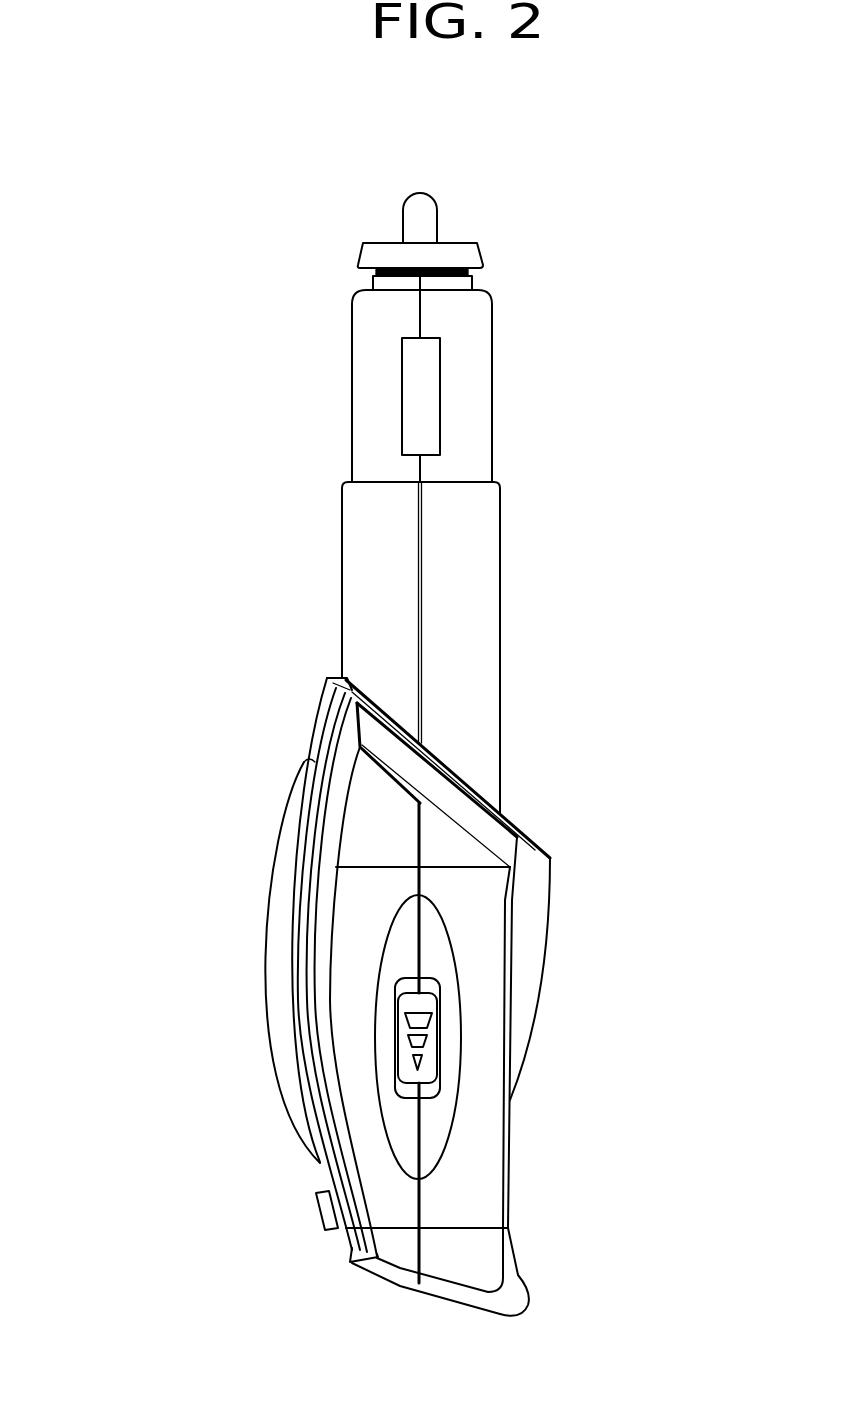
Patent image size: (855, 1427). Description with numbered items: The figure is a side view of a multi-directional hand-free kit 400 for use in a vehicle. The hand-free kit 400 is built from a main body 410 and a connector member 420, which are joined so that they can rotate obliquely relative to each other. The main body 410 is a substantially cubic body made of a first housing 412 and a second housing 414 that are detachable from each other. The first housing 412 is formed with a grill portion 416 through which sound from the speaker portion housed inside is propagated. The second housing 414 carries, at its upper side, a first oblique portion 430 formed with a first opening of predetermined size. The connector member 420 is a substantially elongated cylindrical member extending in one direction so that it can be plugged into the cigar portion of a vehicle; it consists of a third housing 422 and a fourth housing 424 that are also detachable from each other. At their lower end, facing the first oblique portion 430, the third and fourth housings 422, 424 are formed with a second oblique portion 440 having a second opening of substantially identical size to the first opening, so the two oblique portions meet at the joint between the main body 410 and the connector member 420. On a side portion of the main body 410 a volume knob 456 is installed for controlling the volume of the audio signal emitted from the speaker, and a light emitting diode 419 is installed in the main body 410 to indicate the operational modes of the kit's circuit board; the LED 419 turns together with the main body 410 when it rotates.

The hand-free kit 400 is at (226, 213).
The main body 410 is at (238, 972).
The first housing 412 is at (383, 1193).
The second housing 414 is at (478, 1167).
The grill portion 416 is at (278, 902).
The light emitting diode 419 is at (333, 1227).
The connector member 420 is at (534, 504).
The third housing 422 is at (373, 578).
The fourth housing 424 is at (474, 572).
The first oblique portion 430 is at (530, 838).
The second oblique portion 440 is at (460, 772).
The volume knob 456 is at (437, 1061).